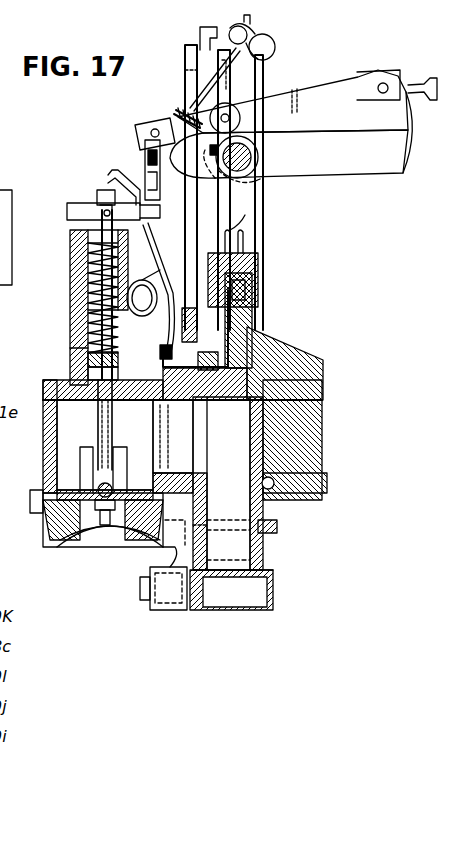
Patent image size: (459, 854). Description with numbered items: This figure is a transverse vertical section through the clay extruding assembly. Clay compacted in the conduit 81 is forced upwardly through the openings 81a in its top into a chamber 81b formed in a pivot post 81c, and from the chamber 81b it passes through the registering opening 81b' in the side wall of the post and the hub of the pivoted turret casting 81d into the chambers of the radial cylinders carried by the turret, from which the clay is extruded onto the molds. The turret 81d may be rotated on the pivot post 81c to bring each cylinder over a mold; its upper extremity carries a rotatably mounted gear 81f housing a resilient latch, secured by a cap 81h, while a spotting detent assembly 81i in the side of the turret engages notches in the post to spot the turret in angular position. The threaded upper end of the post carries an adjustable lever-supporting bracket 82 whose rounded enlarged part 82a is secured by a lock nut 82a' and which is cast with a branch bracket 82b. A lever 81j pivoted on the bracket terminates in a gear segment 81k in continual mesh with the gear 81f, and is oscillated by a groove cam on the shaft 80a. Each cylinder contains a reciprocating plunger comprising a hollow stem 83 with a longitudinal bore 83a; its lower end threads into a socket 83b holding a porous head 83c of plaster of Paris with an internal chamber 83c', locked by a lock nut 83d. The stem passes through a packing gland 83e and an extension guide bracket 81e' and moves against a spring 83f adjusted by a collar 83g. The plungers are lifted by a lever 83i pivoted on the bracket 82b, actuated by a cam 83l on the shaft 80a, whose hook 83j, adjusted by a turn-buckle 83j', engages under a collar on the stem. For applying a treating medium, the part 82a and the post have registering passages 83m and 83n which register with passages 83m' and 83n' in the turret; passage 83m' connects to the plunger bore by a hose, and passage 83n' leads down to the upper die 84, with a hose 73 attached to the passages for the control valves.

The hose 73 is at (230, 230).
The shaft 80a is at (242, 144).
The conduit 81 is at (0, 200).
The openings 81a is at (231, 590).
The chamber 81b is at (265, 535).
The opening 81b' is at (228, 483).
The pivot post 81c is at (263, 566).
The pivoted turret casting 81d is at (322, 430).
The extension guide bracket 81e' is at (44, 351).
The gear 81f is at (290, 350).
The cap 81h is at (258, 332).
The spotting or positioning detent assembly 81i is at (328, 485).
The lever 81j is at (154, 290).
The gear segment 81k is at (182, 330).
The lever-supporting bracket or post 82 is at (243, 200).
The rounded enlarged lower extremity 82a is at (255, 268).
The lock nut 82a' is at (270, 292).
The branch bracket 82b is at (387, 130).
The stem 83 is at (100, 200).
The longitudinal bore 83a is at (100, 430).
The socket 83b is at (158, 550).
The porous head 83c is at (77, 532).
The chamber 83c' is at (91, 555).
The lock nut 83d is at (70, 493).
The packing gland 83e is at (55, 383).
The spring 83f is at (88, 275).
The collar 83g is at (88, 348).
The lever 83i is at (335, 92).
The hook 83j is at (112, 150).
The turn-buckle 83j' is at (115, 142).
The cam 83l is at (262, 137).
The bore or passage 83m is at (267, 313).
The bore or passage 83m' is at (173, 355).
The bore or passage 83n is at (208, 387).
The bore or passage 83n' is at (227, 418).
The upper die or former 84 is at (50, 528).